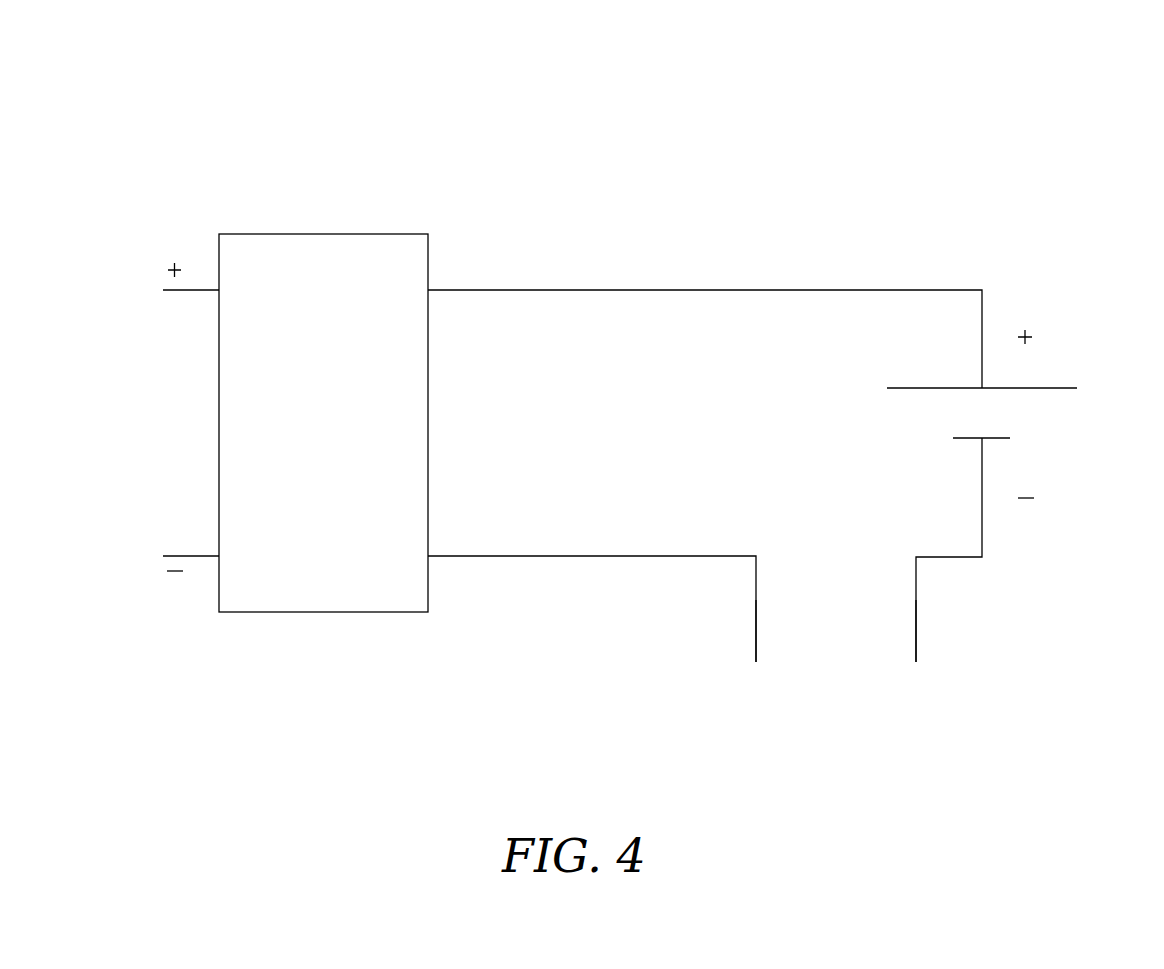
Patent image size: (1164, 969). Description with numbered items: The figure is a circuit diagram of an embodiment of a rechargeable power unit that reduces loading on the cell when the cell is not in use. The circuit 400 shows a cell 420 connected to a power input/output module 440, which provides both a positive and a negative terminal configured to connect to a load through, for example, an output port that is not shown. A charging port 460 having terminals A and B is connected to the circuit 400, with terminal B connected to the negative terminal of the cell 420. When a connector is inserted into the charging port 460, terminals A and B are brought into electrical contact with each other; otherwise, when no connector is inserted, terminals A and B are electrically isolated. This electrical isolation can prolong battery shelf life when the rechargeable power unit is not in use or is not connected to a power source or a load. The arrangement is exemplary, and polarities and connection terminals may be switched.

The circuit 400 is at (615, 92).
The cell 420 is at (1065, 370).
The power input/output module 440 is at (285, 628).
The charging port 460 is at (843, 718).